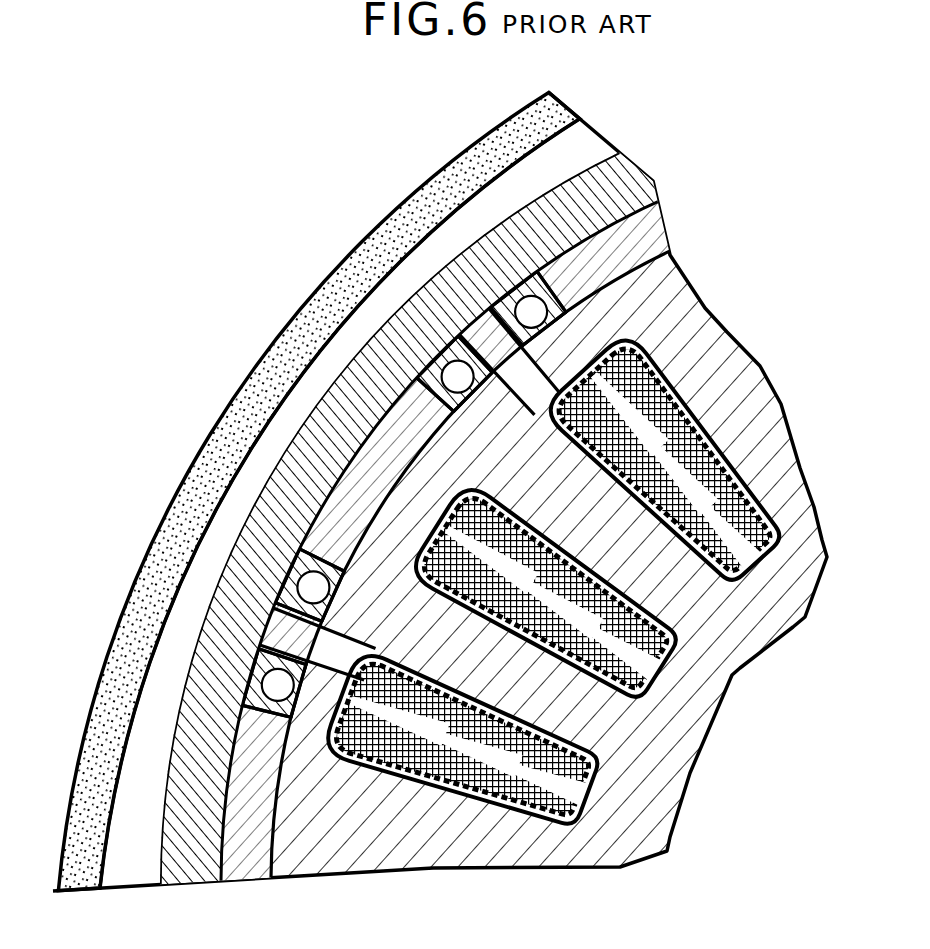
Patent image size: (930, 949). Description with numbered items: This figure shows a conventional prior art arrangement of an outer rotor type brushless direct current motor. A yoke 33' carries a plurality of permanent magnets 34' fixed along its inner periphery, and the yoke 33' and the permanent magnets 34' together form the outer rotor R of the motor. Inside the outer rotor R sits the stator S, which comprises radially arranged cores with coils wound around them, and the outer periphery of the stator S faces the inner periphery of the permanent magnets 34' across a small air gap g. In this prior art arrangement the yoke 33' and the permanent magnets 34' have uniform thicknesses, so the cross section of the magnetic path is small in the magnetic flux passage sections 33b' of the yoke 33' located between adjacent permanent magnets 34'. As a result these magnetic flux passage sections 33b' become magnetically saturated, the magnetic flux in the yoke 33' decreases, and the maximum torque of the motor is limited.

The outer rotor R is at (418, 300).
The stator S is at (762, 370).
The air gap g is at (350, 580).
The yoke 33' is at (415, 518).
The magnetic flux passage section 33b' is at (404, 494).
The permanent magnet 34' is at (467, 538).